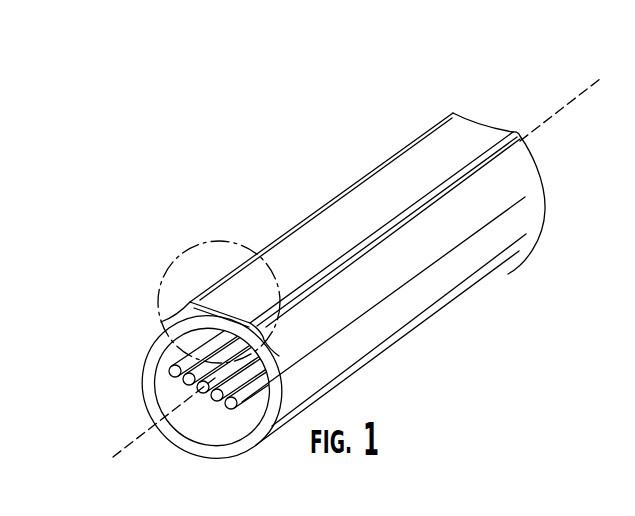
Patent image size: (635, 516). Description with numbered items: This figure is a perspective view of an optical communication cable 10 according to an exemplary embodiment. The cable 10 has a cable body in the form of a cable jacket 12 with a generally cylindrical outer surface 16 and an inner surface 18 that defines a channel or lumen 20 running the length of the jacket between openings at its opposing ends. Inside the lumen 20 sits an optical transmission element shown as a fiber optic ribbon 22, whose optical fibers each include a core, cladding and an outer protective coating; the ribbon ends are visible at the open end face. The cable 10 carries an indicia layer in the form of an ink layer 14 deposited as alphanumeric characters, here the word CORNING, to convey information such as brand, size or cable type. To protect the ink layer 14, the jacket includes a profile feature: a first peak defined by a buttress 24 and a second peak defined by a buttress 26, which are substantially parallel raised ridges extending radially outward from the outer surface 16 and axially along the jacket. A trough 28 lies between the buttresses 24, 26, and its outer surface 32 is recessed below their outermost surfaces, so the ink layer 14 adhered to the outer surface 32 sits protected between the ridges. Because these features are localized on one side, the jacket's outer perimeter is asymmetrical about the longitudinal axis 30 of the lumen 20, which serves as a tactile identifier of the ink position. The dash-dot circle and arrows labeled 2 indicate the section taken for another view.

The cable 10 is at (222, 120).
The cable jacket 12 is at (163, 331).
The ink layer 14 is at (271, 228).
The outer surface 16 is at (382, 312).
The inner surface 18 is at (195, 413).
The lumen 20 is at (168, 399).
The fiber optic ribbon 22 is at (238, 400).
The buttress 24 is at (356, 180).
The buttress 26 is at (491, 145).
The trough 28 is at (460, 142).
The longitudinal axis 30 is at (560, 112).
The outer surface of trough 32 is at (427, 168).
The section line for FIG. 2 is at (250, 357).